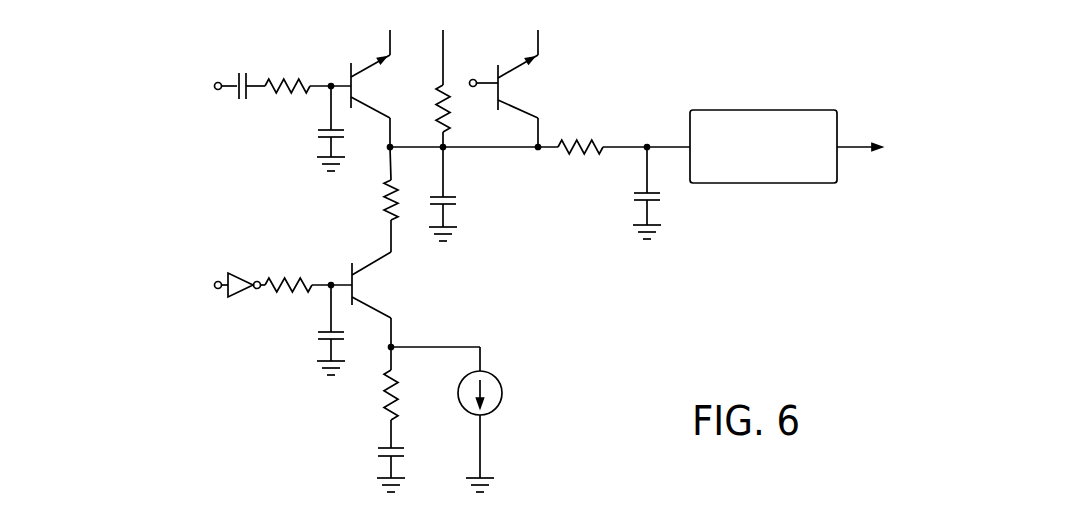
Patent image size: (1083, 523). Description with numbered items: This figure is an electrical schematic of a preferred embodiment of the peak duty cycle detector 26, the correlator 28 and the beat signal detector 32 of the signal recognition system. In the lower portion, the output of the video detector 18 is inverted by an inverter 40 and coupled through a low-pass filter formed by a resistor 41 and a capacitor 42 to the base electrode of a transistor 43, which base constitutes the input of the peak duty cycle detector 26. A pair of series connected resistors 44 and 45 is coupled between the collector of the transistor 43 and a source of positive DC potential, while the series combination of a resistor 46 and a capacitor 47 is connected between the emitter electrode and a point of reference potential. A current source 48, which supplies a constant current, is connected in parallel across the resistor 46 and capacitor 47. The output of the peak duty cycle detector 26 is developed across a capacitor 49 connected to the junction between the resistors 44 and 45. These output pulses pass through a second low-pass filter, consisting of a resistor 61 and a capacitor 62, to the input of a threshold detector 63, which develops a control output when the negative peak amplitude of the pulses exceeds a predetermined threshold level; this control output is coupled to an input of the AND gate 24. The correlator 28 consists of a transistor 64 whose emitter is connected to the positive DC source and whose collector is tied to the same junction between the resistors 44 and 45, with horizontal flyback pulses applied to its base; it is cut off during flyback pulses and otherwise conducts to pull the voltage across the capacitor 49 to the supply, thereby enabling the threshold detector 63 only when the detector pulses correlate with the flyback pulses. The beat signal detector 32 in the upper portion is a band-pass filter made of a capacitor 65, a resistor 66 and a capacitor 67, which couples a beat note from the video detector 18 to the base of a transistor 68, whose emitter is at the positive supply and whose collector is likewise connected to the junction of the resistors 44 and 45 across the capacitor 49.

The video detector 18 is at (122, 186).
The AND gate 24 is at (906, 146).
The peak duty cycle detector 26 is at (295, 237).
The correlator 28 is at (638, 80).
The beat signal detector 32 is at (301, 37).
The inverter 40 is at (245, 274).
The resistor 41 is at (283, 296).
The capacitor 42 is at (320, 340).
The transistor 43 is at (349, 276).
The resistor 44 is at (385, 214).
The resistor 45 is at (440, 103).
The resistor 46 is at (385, 390).
The capacitor 47 is at (380, 459).
The current source 48 is at (497, 410).
The capacitor 49 is at (452, 196).
The resistor 61 is at (573, 143).
The capacitor 62 is at (633, 201).
The threshold detector 63 is at (764, 110).
The transistor 64 is at (497, 97).
The capacitor 65 is at (247, 101).
The resistor 66 is at (297, 94).
The capacitor 67 is at (318, 139).
The transistor 68 is at (349, 80).